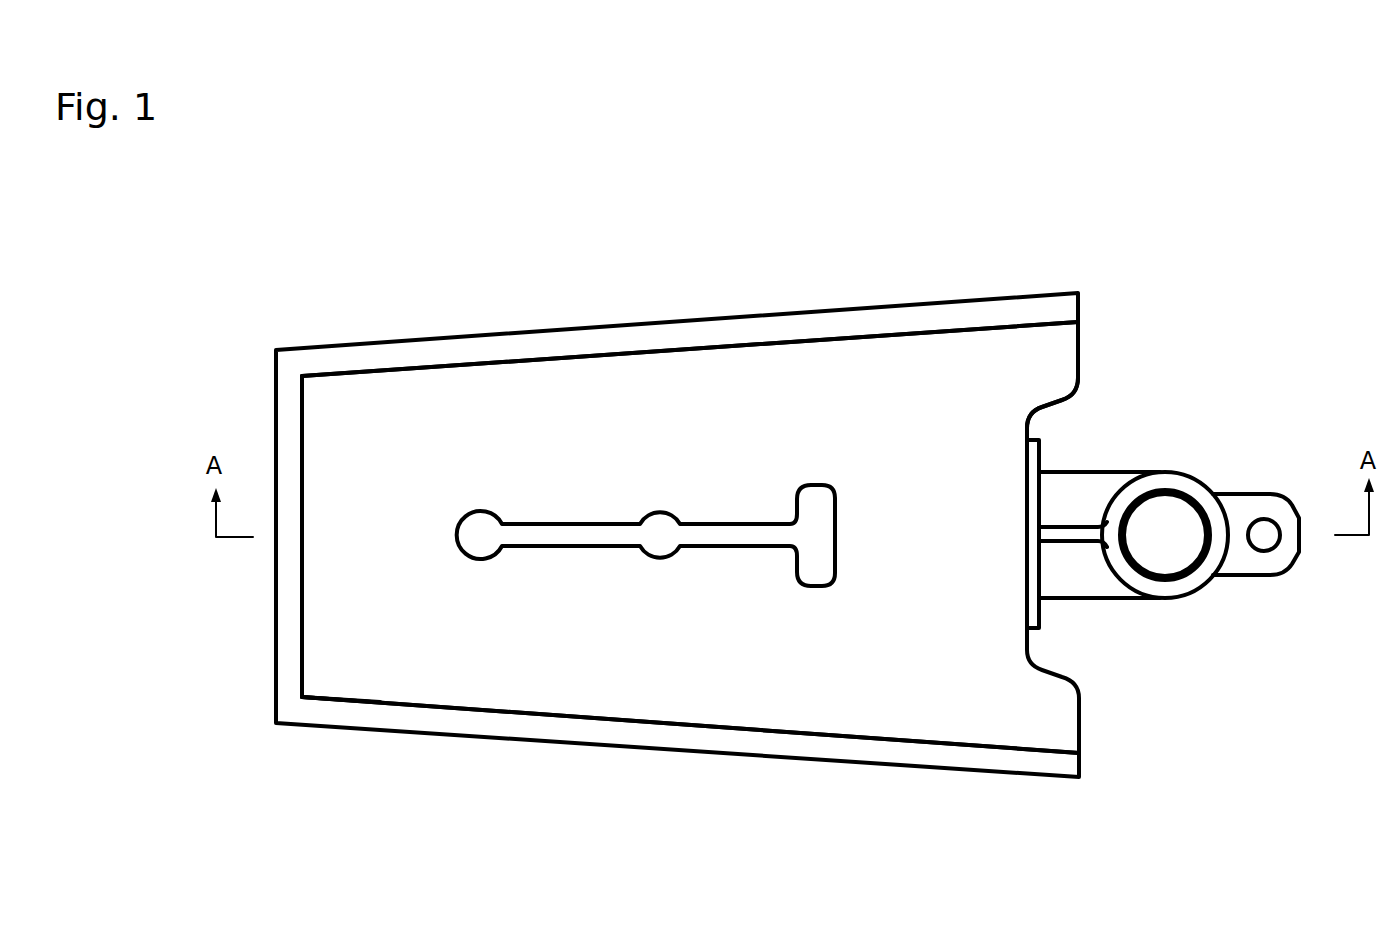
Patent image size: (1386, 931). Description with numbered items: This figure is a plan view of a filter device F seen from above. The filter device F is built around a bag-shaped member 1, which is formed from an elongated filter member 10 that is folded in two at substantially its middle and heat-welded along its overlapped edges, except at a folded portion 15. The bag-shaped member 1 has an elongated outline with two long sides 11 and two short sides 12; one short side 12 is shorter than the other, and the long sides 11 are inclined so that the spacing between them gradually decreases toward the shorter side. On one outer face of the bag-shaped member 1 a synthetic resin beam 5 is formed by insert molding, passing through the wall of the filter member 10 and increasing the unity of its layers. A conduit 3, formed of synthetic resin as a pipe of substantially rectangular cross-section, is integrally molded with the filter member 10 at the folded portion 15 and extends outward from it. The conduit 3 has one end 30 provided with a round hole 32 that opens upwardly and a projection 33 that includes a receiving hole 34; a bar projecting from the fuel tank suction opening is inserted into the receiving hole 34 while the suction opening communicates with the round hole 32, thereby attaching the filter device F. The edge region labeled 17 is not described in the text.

The bag-shaped member 1 is at (648, 668).
The filter member 10 is at (788, 715).
The long side 11 is at (488, 362).
The short side 12 is at (298, 670).
The folded portion 15 is at (1030, 420).
The side edge portion 17 is at (298, 595).
The conduit 3 is at (1088, 482).
The one end 30 is at (1197, 575).
The round hole 32 is at (1171, 505).
The projection 33 is at (1285, 560).
The receiving hole 34 is at (1266, 528).
The beam 5 is at (585, 528).
The filter device F is at (597, 326).